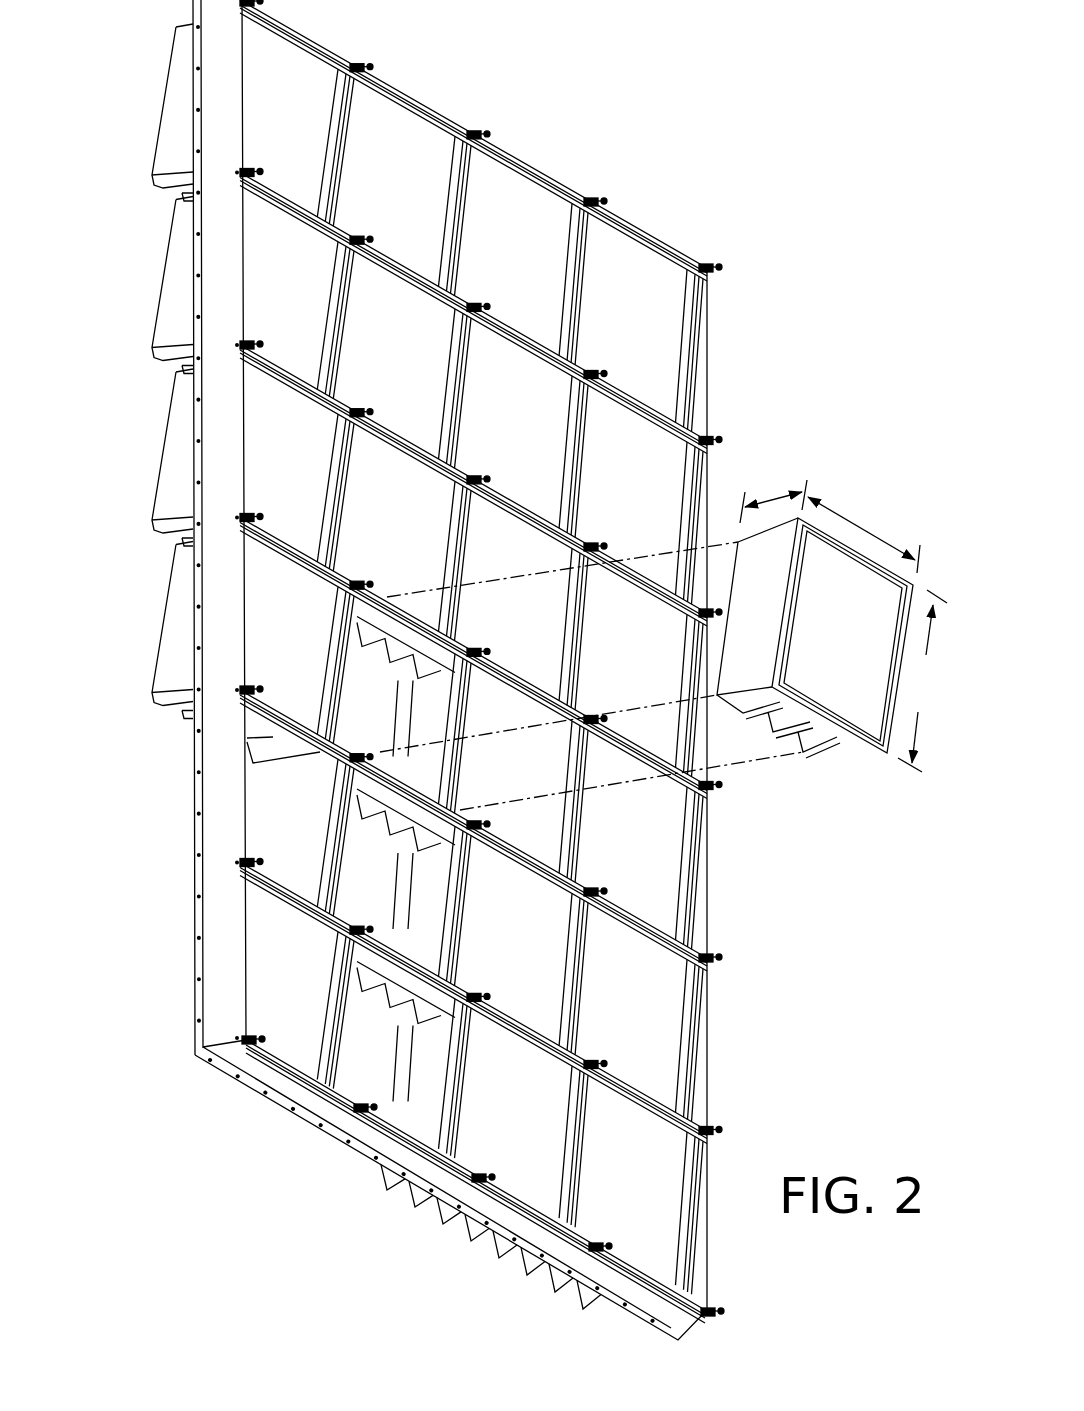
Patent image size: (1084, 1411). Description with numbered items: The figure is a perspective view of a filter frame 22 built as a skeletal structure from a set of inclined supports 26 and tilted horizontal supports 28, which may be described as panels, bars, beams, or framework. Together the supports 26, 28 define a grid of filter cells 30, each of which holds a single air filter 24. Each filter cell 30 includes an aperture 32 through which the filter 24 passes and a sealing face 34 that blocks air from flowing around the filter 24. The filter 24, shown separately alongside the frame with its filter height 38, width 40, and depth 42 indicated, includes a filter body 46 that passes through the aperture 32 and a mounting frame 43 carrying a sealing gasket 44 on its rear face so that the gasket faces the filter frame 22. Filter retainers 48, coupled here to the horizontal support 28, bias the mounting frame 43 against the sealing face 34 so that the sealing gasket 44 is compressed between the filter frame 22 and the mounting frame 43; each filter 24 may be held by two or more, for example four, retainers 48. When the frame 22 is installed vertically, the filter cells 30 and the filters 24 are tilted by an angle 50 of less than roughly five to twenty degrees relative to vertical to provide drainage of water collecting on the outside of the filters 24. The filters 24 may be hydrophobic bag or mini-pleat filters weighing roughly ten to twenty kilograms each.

The filter frame 22 is at (119, 1127).
The air filter 24 is at (508, 666).
The inclined support 26 is at (327, 848).
The horizontal support 28 is at (312, 753).
The filter cell 30 is at (351, 1165).
The aperture 32 is at (267, 998).
The sealing face 34 is at (322, 928).
The filter height 38 is at (922, 681).
The filter width 40 is at (864, 535).
The filter depth 42 is at (778, 497).
The mounting frame 43 is at (887, 755).
The sealing gasket 44 is at (850, 742).
The filter body 46 is at (823, 748).
The filter retainer 48 is at (361, 233).
The angle 50 is at (660, 397).